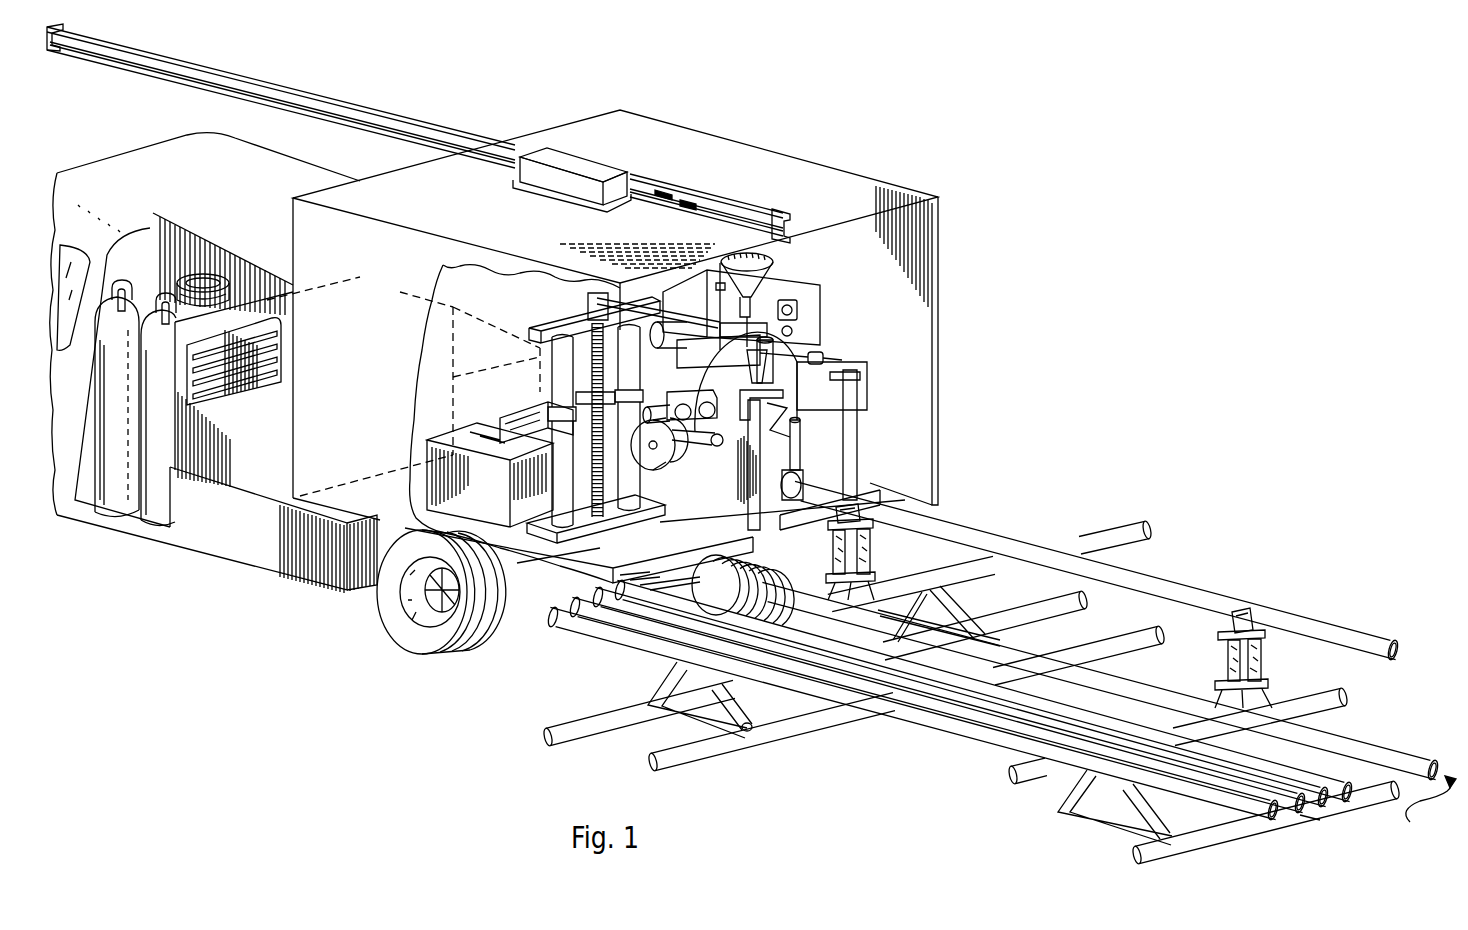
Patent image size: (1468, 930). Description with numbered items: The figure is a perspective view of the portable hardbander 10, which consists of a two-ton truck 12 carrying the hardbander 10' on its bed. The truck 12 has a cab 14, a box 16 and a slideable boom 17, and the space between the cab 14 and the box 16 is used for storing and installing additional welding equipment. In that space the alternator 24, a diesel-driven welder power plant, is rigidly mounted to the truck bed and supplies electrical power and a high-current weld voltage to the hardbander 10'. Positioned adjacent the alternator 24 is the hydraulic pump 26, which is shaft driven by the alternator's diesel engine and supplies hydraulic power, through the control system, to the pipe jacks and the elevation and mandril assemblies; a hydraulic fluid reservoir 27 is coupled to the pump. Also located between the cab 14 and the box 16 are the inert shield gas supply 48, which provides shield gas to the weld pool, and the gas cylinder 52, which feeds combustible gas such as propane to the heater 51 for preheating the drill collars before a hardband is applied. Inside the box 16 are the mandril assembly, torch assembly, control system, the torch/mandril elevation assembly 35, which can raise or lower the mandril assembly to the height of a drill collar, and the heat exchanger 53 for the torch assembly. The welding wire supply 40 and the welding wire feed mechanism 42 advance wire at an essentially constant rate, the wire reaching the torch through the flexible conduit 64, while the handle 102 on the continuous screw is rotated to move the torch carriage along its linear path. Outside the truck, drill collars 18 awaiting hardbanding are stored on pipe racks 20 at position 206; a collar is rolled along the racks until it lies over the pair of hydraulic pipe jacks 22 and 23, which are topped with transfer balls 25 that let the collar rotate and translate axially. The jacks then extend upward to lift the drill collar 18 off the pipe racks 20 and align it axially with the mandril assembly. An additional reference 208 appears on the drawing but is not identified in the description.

The portable hardbander 10 is at (569, 61).
The hardbander 10' is at (969, 403).
The two ton truck 12 is at (245, 536).
The cab 14 is at (113, 162).
The box 16 is at (808, 178).
The slideable boom 17 is at (358, 100).
The drill collars 18 is at (1400, 663).
The pipe racks 20 is at (1132, 522).
The pipe jack 22 is at (866, 548).
The pipe jack 23 is at (1228, 662).
The alternator 24 is at (260, 467).
The transfer balls 25 is at (846, 500).
The hydraulic pump 26 is at (487, 343).
The hydraulic fluid reservoir 27 is at (526, 420).
The torch/mandril elevation assembly 35 is at (557, 330).
The welding wire supply 40 is at (657, 465).
The welding wire feed mechanism 42 is at (700, 407).
The inert shield gas supply 48 is at (107, 490).
The heater 51 is at (773, 563).
The gas cylinder 52 is at (183, 272).
The heat exchanger 53 is at (498, 497).
The flexible conduit 64 is at (808, 350).
The handle 102 is at (777, 422).
The position 206 is at (1313, 818).
The pipe end direction 208 is at (1431, 807).